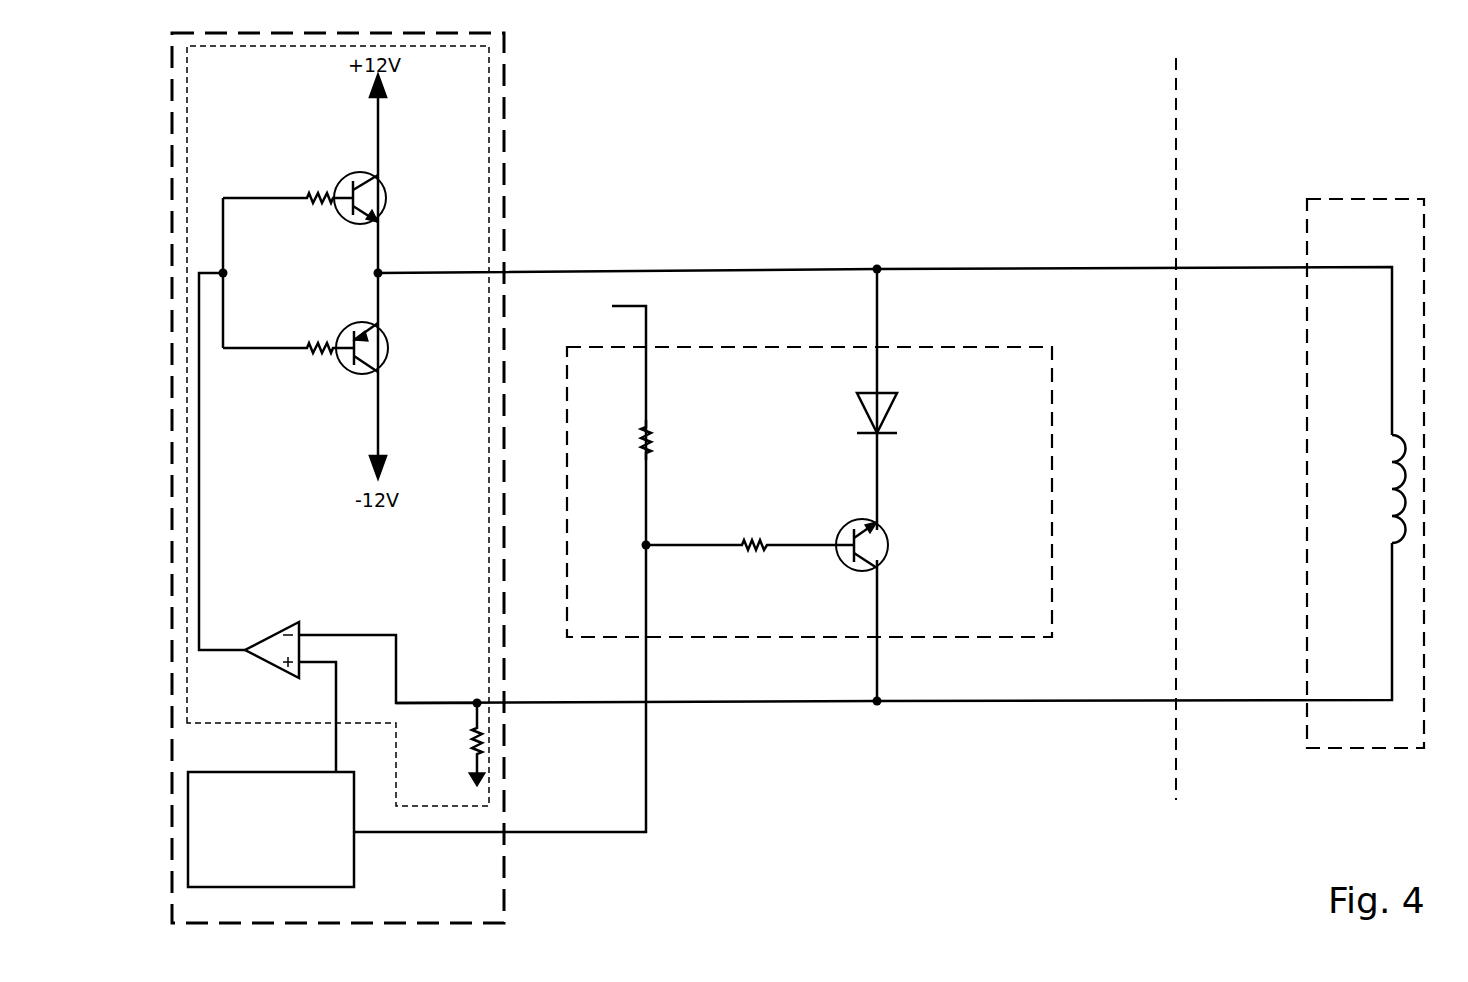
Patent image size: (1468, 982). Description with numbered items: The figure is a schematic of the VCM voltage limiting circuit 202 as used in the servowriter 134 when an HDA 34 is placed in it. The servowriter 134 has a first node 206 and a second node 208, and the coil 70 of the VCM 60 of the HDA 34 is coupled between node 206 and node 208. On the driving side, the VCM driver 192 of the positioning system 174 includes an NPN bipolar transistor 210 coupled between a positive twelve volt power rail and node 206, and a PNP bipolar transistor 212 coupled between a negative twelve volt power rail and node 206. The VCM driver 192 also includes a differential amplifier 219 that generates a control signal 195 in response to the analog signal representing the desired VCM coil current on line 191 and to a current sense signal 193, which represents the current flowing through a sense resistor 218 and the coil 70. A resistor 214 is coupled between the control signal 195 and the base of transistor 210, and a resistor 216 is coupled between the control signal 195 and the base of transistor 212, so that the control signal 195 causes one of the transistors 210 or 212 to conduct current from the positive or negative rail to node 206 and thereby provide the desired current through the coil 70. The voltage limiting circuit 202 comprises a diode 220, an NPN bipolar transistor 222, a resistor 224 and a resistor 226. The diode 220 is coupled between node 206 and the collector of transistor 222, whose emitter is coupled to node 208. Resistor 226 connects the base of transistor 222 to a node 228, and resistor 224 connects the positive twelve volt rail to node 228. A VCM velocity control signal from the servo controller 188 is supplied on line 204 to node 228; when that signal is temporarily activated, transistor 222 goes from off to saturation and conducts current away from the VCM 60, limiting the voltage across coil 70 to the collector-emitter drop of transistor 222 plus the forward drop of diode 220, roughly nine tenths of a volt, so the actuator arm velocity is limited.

The HDA 34 is at (1240, 128).
The VCM 60 is at (1370, 199).
The coil 70 is at (1410, 444).
The servowriter 134 is at (1037, 88).
The positioning system 174 is at (503, 72).
The servo controller 188 is at (284, 772).
The line 191 is at (337, 700).
The VCM driver 192 is at (187, 122).
The current sense signal 193 is at (382, 635).
The control signal 195 is at (199, 483).
The VCM voltage limiting circuit 202 is at (987, 330).
The line 204 is at (648, 779).
The first node 206 is at (880, 268).
The second node 208 is at (882, 705).
The NPN bipolar transistor 210 is at (355, 173).
The PNP bipolar transistor 212 is at (366, 322).
The resistor 214 is at (316, 210).
The resistor 216 is at (316, 360).
The sense resistor 218 is at (470, 742).
The differential amplifier 219 is at (285, 617).
The diode 220 is at (905, 398).
The NPN bipolar transistor 222 is at (862, 519).
The resistor 224 is at (641, 437).
The resistor 226 is at (752, 541).
The node 228 is at (641, 545).